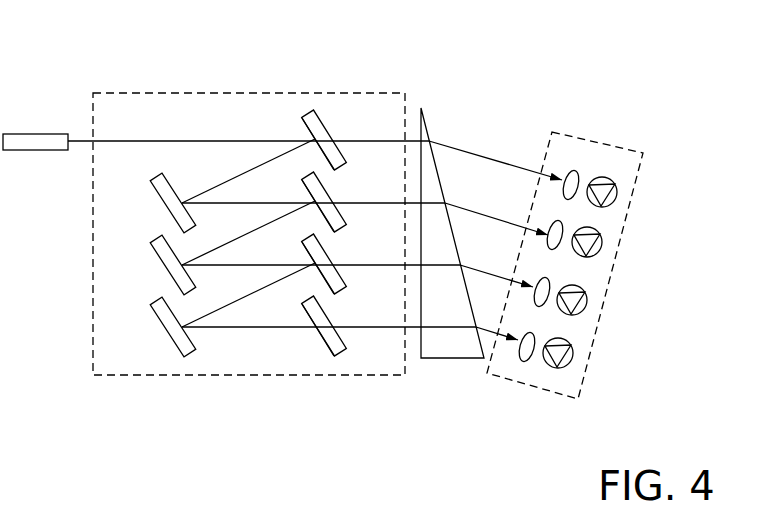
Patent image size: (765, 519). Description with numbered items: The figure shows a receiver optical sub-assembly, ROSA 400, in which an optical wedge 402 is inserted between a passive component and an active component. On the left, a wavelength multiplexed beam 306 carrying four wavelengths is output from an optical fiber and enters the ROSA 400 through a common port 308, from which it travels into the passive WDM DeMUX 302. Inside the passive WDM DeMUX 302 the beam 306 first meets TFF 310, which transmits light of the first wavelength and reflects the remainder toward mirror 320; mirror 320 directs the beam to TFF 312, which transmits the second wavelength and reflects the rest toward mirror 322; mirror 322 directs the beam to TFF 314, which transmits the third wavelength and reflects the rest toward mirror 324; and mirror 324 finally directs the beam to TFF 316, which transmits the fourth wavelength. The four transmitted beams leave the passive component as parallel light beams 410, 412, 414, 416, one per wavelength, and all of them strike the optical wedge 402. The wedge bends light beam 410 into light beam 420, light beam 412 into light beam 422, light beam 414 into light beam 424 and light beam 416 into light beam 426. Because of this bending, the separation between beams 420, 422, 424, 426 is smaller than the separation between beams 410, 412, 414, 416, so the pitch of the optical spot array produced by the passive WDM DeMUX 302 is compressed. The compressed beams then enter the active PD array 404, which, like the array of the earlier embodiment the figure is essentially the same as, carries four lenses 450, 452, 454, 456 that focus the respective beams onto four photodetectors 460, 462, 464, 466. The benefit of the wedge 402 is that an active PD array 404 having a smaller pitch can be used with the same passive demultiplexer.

The ROSA 400 is at (145, 40).
The passive WDM DeMUX 302 is at (212, 90).
The common port 308 is at (22, 131).
The wavelength multiplexed beam 306 is at (132, 141).
The TFF 310 is at (303, 130).
The TFF 312 is at (303, 192).
The TFF 314 is at (303, 256).
The TFF 316 is at (303, 319).
The mirror 320 is at (150, 196).
The mirror 322 is at (150, 260).
The mirror 324 is at (150, 320).
The light beam 410 is at (337, 136).
The light beam 412 is at (337, 199).
The light beam 414 is at (337, 261).
The light beam 416 is at (337, 324).
The optical wedge 402 is at (433, 122).
The active PD array 404 is at (622, 146).
The light beam 420 is at (483, 152).
The light beam 422 is at (483, 210).
The light beam 424 is at (470, 268).
The light beam 426 is at (476, 323).
The first lens 450 is at (563, 191).
The second lens 452 is at (549, 247).
The third lens 454 is at (536, 304).
The fourth lens 456 is at (521, 359).
The first photodetector 460 is at (617, 199).
The second photodetector 462 is at (602, 249).
The third photodetector 464 is at (587, 307).
The fourth photodetector 466 is at (573, 360).